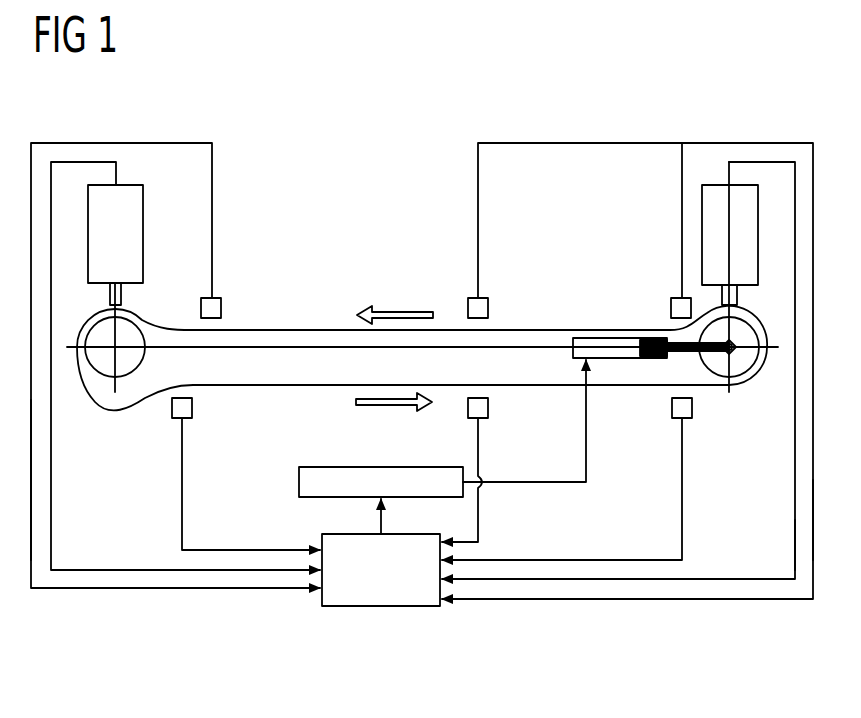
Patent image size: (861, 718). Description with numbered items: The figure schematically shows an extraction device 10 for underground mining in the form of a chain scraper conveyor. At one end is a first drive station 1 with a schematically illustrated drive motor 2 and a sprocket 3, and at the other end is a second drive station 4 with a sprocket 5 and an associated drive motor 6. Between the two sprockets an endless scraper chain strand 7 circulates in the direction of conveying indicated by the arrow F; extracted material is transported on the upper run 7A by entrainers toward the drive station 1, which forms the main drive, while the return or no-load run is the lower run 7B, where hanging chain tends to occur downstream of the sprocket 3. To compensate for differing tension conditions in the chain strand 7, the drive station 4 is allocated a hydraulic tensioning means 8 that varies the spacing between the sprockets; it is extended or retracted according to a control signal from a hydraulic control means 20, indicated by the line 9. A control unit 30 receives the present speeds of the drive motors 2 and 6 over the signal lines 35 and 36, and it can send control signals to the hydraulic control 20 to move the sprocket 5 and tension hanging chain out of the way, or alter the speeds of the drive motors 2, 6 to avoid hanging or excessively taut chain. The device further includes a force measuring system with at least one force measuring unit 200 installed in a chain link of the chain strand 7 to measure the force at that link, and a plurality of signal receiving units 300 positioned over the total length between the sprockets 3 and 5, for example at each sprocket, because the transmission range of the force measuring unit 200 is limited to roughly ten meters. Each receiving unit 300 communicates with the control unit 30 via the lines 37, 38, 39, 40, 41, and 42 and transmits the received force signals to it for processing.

The first drive station 1 is at (139, 288).
The drive motor 2 is at (137, 210).
The sprocket 3 is at (135, 355).
The second drive station 4 is at (702, 277).
The sprocket 5 is at (720, 362).
The drive motor 6 is at (745, 226).
The scraper chain strand 7 is at (290, 306).
The upper run 7A is at (553, 328).
The lower run 7B is at (288, 388).
The hydraulic tensioning means 8 is at (615, 360).
The line 9 is at (588, 464).
The extraction device 10 is at (422, 311).
The hydraulic control means 20 is at (660, 313).
The control unit 30 is at (382, 608).
The signal line 35 is at (52, 488).
The signal line 36 is at (794, 560).
The line 37 is at (182, 522).
The line 38 is at (480, 512).
The line 39 is at (684, 462).
The line 40 is at (168, 142).
The line 41 is at (582, 142).
The line 42 is at (812, 514).
The force measuring unit 200 is at (330, 328).
The signal receiving unit 300 is at (219, 298).
The direction of conveying F is at (400, 312).